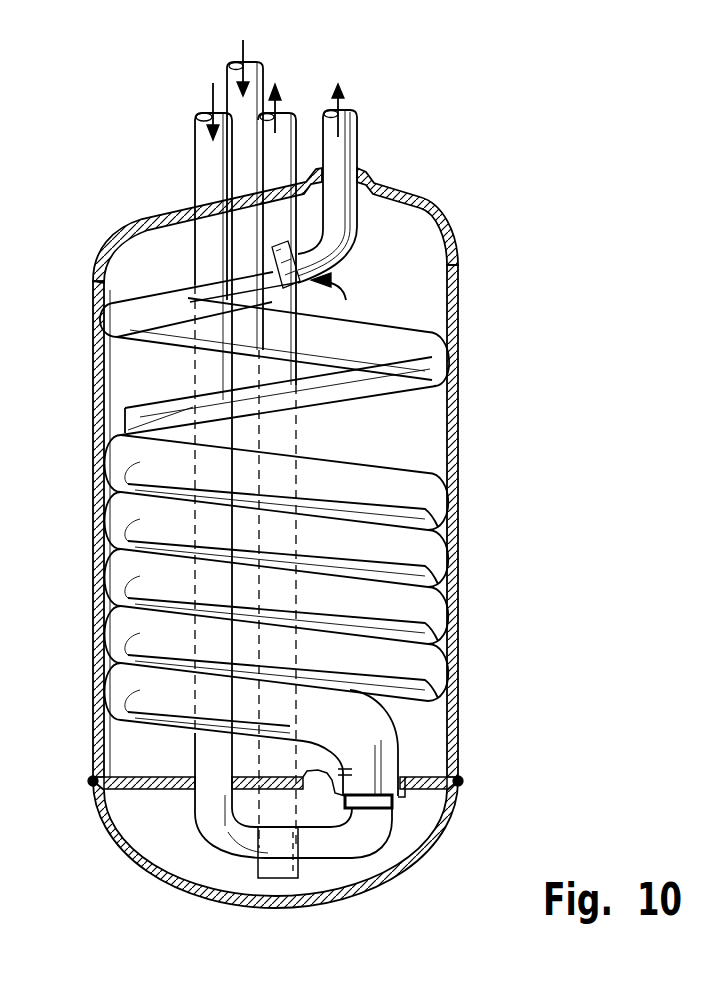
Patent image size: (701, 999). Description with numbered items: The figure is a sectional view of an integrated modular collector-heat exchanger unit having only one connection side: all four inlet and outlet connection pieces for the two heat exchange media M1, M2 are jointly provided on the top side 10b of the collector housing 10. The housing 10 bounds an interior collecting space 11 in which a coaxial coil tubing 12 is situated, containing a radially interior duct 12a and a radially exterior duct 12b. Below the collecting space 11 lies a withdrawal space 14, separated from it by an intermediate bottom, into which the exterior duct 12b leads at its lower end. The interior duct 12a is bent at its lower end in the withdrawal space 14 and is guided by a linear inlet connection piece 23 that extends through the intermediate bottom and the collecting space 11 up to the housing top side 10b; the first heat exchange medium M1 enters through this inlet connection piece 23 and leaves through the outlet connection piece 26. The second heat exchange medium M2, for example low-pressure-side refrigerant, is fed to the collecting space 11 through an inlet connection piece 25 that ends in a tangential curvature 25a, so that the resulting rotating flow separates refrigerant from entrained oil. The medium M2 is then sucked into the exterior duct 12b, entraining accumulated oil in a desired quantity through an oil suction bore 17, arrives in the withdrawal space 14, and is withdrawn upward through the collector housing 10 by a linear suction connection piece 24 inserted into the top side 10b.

The collector housing 10 is at (96, 523).
The housing top side 10b is at (421, 197).
The collecting space 11 is at (428, 420).
The coaxial coil tubing 12 is at (422, 497).
The radially interior duct 12a is at (333, 108).
The radially exterior duct 12b is at (342, 245).
The withdrawal space 14 is at (223, 872).
The oil suction bore 17 is at (340, 772).
The linear inlet connection piece 23 is at (203, 178).
The linear suction connection piece 24 is at (283, 128).
The inlet connection piece 25 is at (228, 80).
The tangential curvature 25a is at (127, 423).
The outlet connection piece 26 is at (347, 151).
The first heat exchange medium M1 is at (211, 97).
The second heat exchange medium M2 is at (275, 84).